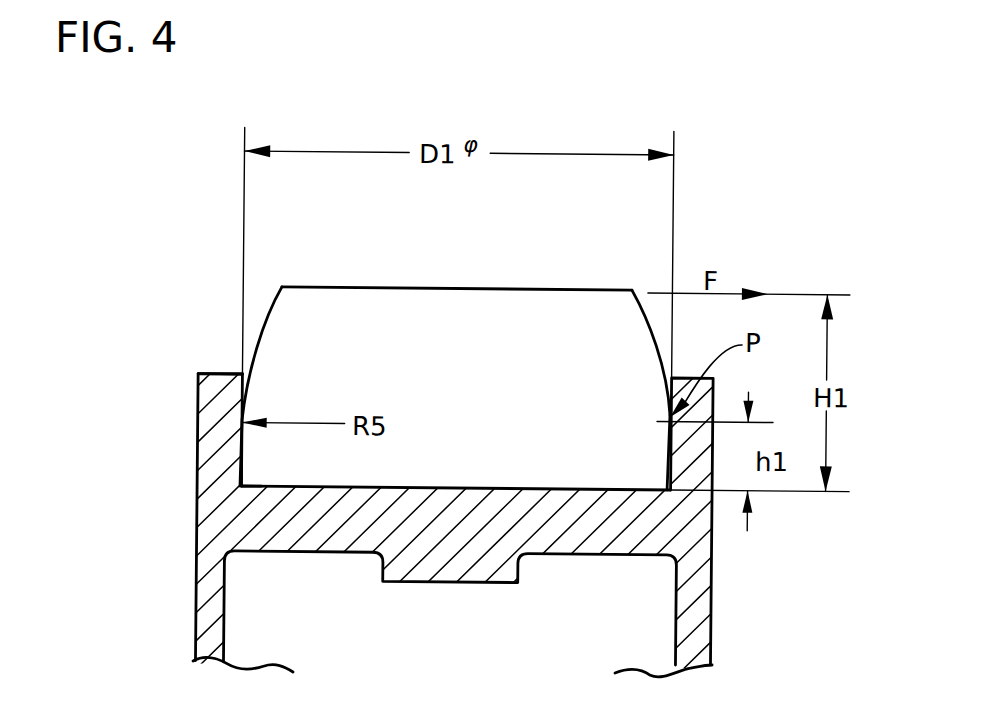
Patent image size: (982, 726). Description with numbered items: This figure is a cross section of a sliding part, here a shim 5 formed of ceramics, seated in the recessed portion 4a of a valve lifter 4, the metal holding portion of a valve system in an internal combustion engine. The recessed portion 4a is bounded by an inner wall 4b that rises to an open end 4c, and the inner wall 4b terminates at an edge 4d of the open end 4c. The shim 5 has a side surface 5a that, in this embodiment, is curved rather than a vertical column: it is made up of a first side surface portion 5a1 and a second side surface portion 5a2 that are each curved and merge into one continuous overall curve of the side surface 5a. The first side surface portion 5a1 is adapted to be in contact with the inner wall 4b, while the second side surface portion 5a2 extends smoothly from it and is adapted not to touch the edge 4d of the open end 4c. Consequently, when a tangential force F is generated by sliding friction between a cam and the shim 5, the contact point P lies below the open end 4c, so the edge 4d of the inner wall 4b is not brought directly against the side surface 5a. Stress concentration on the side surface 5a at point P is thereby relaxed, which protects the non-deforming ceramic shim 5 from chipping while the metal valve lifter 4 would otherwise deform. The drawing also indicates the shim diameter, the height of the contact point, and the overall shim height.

The valve lifter 4 is at (200, 554).
The recessed portion 4a is at (563, 488).
The inner wall 4b is at (249, 476).
The open end 4c is at (213, 376).
The edge 4d is at (263, 355).
The shim 5 is at (377, 285).
The side surface 5a is at (260, 340).
The first side surface portion 5a1 is at (670, 415).
The second side surface portion 5a2 is at (660, 355).